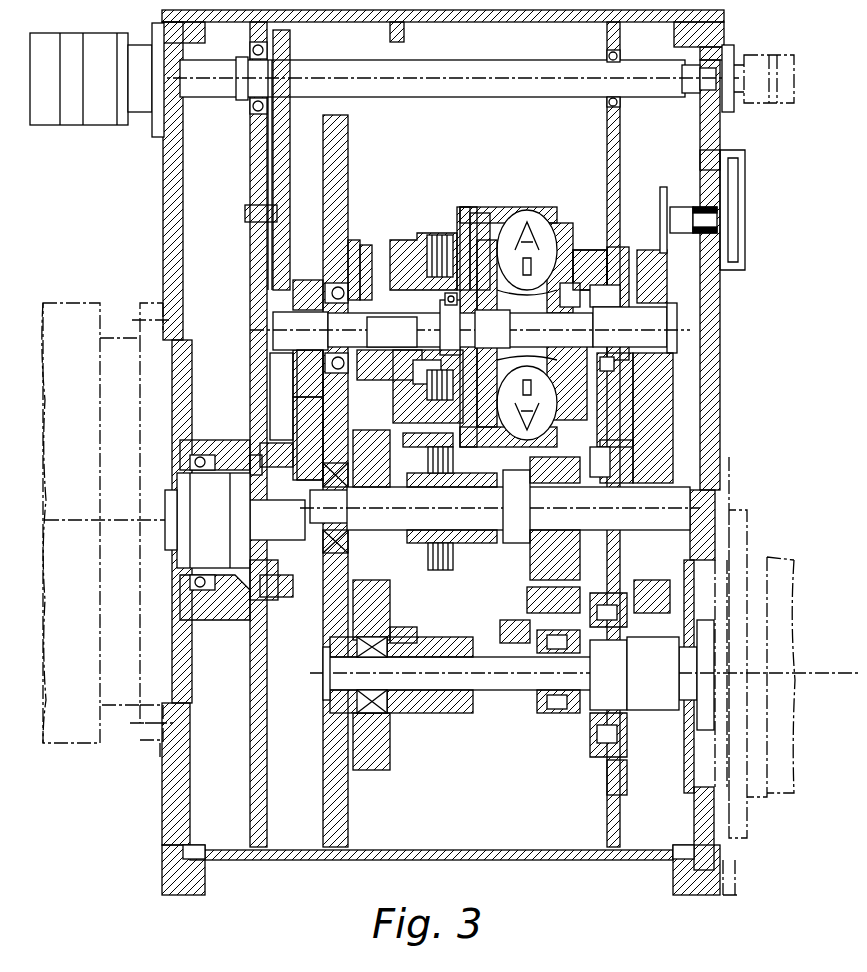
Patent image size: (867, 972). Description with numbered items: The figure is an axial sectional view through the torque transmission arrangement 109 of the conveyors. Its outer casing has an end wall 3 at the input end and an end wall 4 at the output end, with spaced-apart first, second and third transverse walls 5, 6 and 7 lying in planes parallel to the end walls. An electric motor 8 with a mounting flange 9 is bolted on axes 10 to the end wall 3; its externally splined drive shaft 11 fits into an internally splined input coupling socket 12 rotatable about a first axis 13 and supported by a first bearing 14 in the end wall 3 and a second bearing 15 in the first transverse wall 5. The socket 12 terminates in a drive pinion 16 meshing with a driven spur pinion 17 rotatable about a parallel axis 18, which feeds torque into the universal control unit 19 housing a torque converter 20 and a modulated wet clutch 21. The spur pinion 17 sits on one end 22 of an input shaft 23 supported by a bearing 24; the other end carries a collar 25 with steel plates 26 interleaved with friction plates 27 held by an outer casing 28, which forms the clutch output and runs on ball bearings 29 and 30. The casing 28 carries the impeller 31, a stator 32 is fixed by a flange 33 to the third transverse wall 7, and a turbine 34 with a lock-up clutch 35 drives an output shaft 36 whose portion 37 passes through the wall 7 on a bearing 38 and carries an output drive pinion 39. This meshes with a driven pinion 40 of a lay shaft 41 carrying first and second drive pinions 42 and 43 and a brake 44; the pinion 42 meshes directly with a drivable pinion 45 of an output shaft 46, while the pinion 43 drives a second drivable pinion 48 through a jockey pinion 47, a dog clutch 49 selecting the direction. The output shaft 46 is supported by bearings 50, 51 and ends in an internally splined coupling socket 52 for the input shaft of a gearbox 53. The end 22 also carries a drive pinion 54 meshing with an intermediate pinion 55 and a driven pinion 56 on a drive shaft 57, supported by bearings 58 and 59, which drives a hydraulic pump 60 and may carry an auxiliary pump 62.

The end wall 3 is at (170, 215).
The end wall 4 is at (712, 428).
The first transverse wall 5 is at (252, 144).
The second transverse wall 6 is at (340, 155).
The third transverse wall 7 is at (620, 160).
The electric motor 8 is at (75, 303).
The mounting flange 9 is at (148, 745).
The bolt axes 10 is at (160, 312).
The drive shaft 11 is at (180, 540).
The input coupling socket 12 is at (230, 472).
The first axis 13 is at (110, 520).
The first bearing 14 is at (213, 610).
The second bearing 15 is at (258, 590).
The drive pinion 16 is at (323, 650).
The driven spur pinion 17 is at (292, 378).
The axis 18 is at (248, 326).
The universal control unit 19 is at (457, 180).
The torque converter 20 is at (554, 204).
The modulated wet clutch 21 is at (440, 247).
The end of input shaft 22 is at (270, 360).
The input shaft 23 is at (368, 252).
The bearing 24 is at (345, 232).
The collar 25 is at (413, 344).
The steel plates 26 is at (448, 362).
The friction plates 27 is at (437, 402).
The outer casing 28 is at (457, 212).
The ball bearing 29 is at (390, 395).
The ball bearing 30 is at (525, 327).
The impeller 31 is at (545, 235).
The stator 32 is at (530, 268).
The flange 33 is at (600, 278).
The turbine 34 is at (500, 230).
The lock-up clutch 35 is at (476, 208).
The output shaft 36 is at (570, 350).
The portion of output shaft 37 is at (614, 360).
The bearing 38 is at (655, 400).
The output drive pinion 39 is at (650, 262).
The driven pinion 40 is at (650, 455).
The lay shaft 41 is at (517, 525).
The first drive pinion 42 is at (390, 580).
The second drive pinion 43 is at (538, 468).
The brake 44 is at (443, 568).
The drivable pinion 45 is at (373, 748).
The output shaft 46 is at (483, 690).
The jockey pinion 47 is at (537, 592).
The second drivable pinion 48 is at (557, 725).
The dog clutch 49 is at (447, 702).
The bearing 50 is at (328, 703).
The bearing 51 is at (627, 750).
The coupling socket 52 is at (650, 688).
The gearbox 53 is at (760, 553).
The drive pinion 54 is at (268, 305).
The intermediate pinion 55 is at (270, 165).
The driven pinion 56 is at (254, 106).
The drive shaft 57 is at (484, 72).
The bearing 58 is at (253, 50).
The bearing 59 is at (620, 102).
The hydraulic pump 60 is at (96, 46).
The auxiliary pump 62 is at (758, 62).
The torque transmission arrangement 109 is at (770, 360).